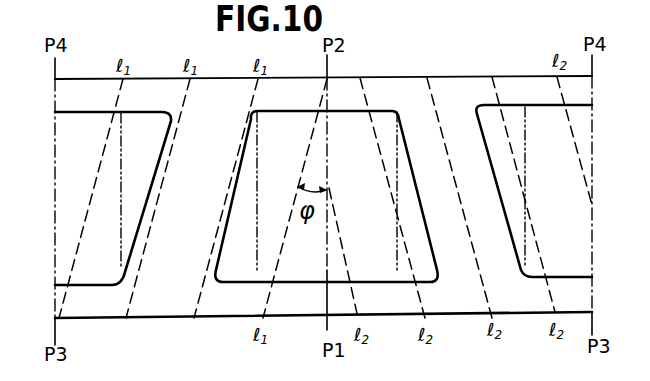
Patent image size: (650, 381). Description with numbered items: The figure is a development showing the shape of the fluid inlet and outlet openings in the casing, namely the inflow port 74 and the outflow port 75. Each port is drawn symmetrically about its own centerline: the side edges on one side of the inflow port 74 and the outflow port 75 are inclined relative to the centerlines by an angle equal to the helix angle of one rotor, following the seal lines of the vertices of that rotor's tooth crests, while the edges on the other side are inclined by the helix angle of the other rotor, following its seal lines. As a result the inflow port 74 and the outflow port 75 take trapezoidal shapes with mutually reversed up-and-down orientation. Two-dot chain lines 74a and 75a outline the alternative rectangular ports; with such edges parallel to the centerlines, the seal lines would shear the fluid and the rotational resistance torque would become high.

The inflow port 74 is at (289, 288).
The two-dot chain line 74a is at (257, 193).
The outflow port 75 is at (85, 290).
The two-dot chain line 75a is at (122, 168).